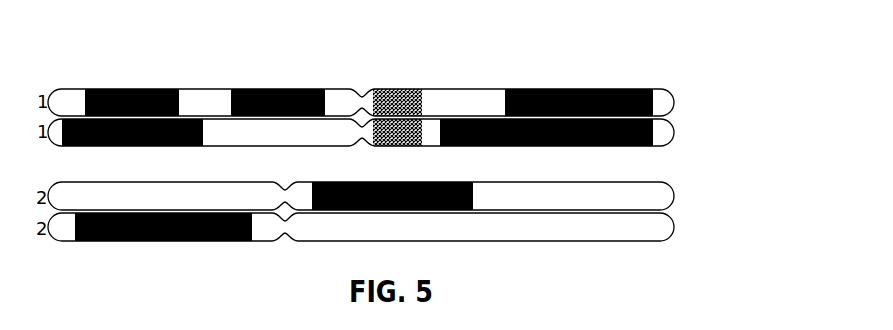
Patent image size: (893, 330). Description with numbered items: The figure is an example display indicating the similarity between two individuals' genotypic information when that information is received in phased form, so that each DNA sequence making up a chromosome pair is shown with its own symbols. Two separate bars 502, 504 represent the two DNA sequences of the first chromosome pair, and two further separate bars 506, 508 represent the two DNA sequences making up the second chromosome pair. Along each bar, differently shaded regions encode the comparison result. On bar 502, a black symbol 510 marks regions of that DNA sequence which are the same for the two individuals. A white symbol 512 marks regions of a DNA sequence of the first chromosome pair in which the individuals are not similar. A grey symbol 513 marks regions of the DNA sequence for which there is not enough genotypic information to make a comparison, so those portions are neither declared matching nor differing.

The bar 502 is at (415, 97).
The bar 504 is at (676, 132).
The bar 506 is at (676, 193).
The bar 508 is at (676, 230).
The black symbol 510 is at (563, 88).
The white symbol 512 is at (203, 88).
The grey symbol 513 is at (393, 88).